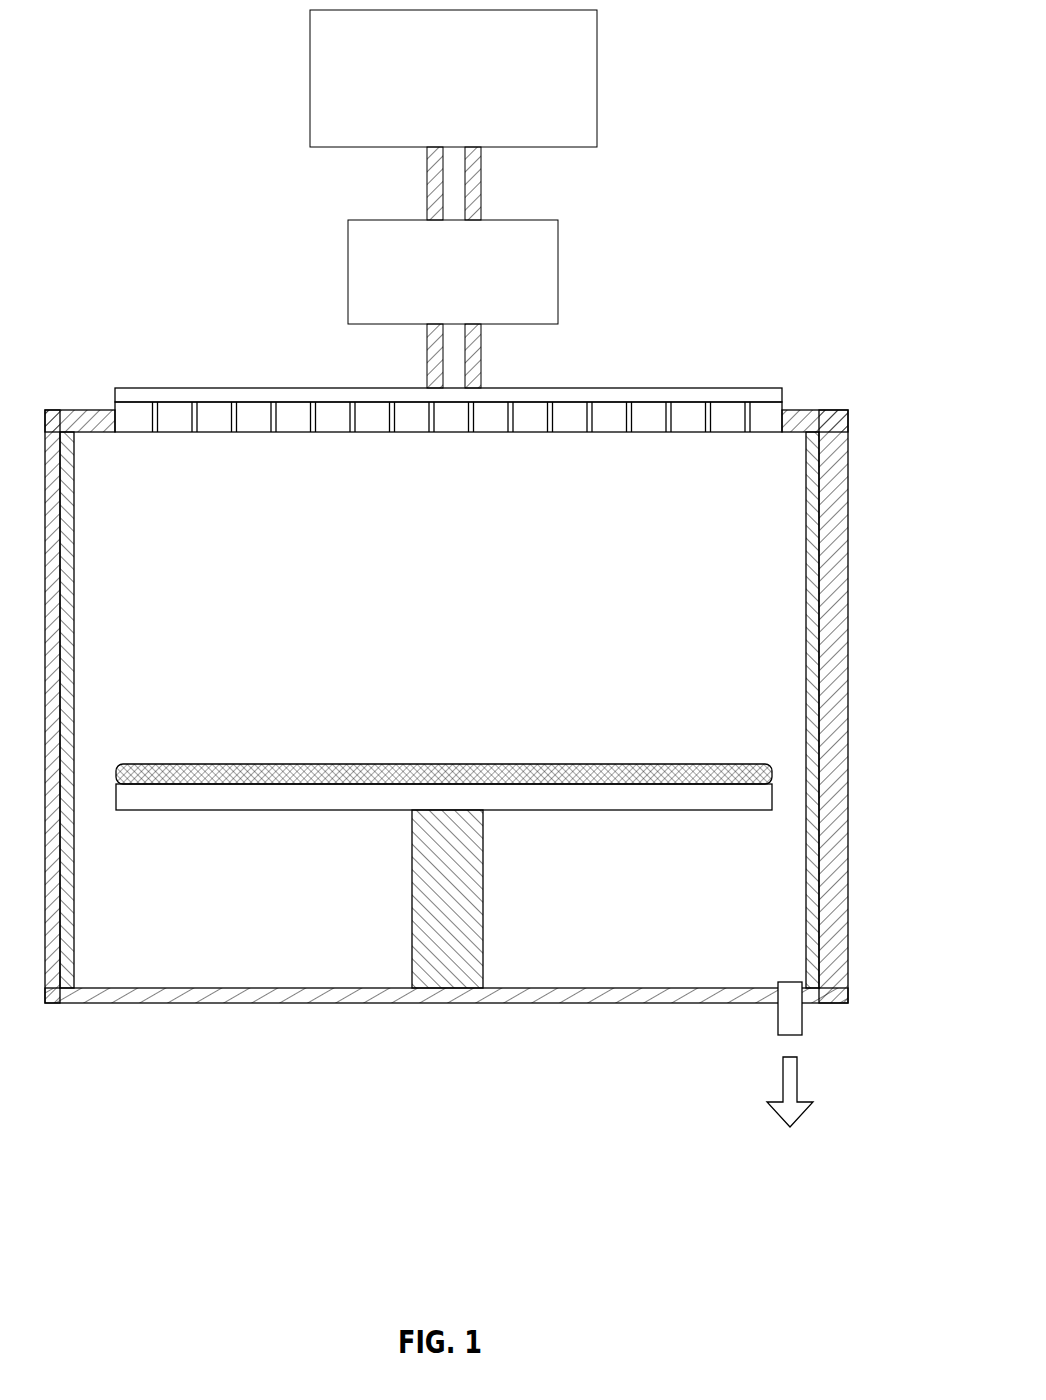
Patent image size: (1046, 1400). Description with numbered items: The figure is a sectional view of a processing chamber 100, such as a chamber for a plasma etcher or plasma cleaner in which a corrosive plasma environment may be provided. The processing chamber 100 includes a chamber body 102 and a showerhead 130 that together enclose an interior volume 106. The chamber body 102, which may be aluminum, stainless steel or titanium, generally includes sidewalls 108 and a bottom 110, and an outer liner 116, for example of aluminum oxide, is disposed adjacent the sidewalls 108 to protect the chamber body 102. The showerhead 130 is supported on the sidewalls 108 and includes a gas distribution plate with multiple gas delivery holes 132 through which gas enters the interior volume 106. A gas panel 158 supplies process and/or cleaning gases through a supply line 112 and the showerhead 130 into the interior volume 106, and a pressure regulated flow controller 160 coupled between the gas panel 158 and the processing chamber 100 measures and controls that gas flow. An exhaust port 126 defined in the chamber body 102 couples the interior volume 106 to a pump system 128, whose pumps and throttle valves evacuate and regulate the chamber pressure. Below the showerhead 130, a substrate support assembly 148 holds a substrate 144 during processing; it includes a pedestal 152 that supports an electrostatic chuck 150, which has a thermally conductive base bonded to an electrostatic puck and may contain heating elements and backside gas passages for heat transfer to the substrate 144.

The processing chamber 100 is at (836, 306).
The chamber body 102 is at (864, 537).
The interior volume 106 is at (705, 534).
The sidewalls 108 is at (848, 646).
The bottom 110 is at (176, 1003).
The supply line 112 is at (482, 366).
The outer liner 116 is at (812, 590).
The exhaust port 126 is at (777, 1005).
The pump system 128 is at (764, 1162).
The showerhead 130 is at (500, 455).
The gas delivery holes 132 is at (210, 404).
The substrate 144 is at (462, 764).
The substrate support assembly 148 is at (350, 893).
The electrostatic chuck 150 is at (166, 810).
The pedestal 152 is at (485, 897).
The gas panel 158 is at (600, 76).
The pressure regulated flow controller 160 is at (560, 262).